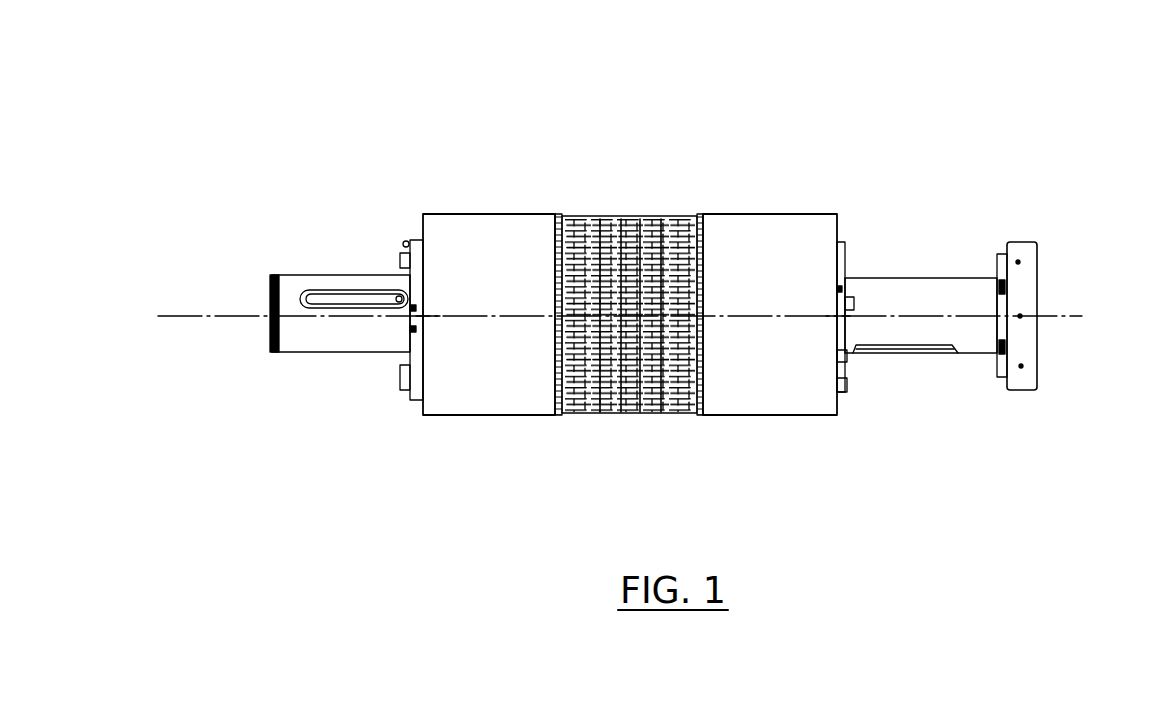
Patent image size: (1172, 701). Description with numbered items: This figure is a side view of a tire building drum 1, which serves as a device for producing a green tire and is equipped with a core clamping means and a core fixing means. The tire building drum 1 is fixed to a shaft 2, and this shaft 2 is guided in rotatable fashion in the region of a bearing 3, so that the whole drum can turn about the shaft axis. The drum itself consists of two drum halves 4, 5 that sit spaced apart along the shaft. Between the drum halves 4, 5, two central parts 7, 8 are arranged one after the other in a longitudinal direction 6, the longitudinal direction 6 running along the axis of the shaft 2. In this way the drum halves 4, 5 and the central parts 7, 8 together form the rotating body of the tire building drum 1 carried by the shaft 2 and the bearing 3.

The tire building drum 1 is at (740, 147).
The shaft 2 is at (910, 295).
The bearing 3 is at (1028, 250).
The drum half 4 is at (481, 218).
The drum half 5 is at (785, 217).
The longitudinal direction 6 is at (182, 315).
The central part 7 is at (592, 216).
The central part 8 is at (670, 216).